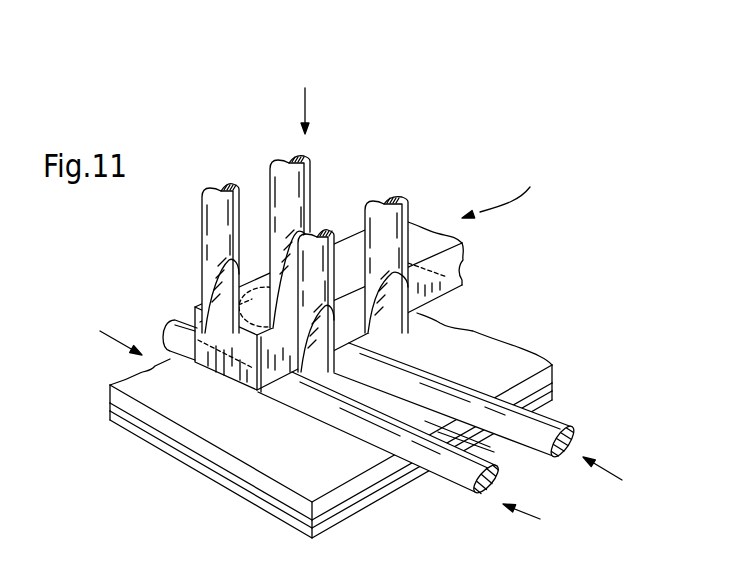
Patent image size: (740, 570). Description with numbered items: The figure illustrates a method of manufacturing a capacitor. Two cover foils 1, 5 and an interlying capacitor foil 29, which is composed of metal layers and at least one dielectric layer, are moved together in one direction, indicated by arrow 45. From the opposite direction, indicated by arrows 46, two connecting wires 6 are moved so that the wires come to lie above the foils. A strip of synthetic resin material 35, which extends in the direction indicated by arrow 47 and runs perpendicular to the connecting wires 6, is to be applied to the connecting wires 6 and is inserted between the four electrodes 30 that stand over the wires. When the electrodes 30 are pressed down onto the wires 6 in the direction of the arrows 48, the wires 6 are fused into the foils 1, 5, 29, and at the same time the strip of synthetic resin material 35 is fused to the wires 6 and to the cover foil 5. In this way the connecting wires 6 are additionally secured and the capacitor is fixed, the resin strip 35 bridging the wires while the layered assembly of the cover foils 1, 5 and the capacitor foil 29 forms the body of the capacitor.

The cover foil 1 is at (553, 397).
The cover foil 5 is at (553, 366).
The connecting wires 6 is at (473, 467).
The capacitor foil 29 is at (553, 387).
The electrodes 30 is at (230, 200).
The strip of synthetic resin material 35 is at (463, 262).
The arrow 45 is at (108, 332).
The arrows 46 is at (540, 519).
The arrow 47 is at (504, 190).
The arrows 48 is at (307, 104).